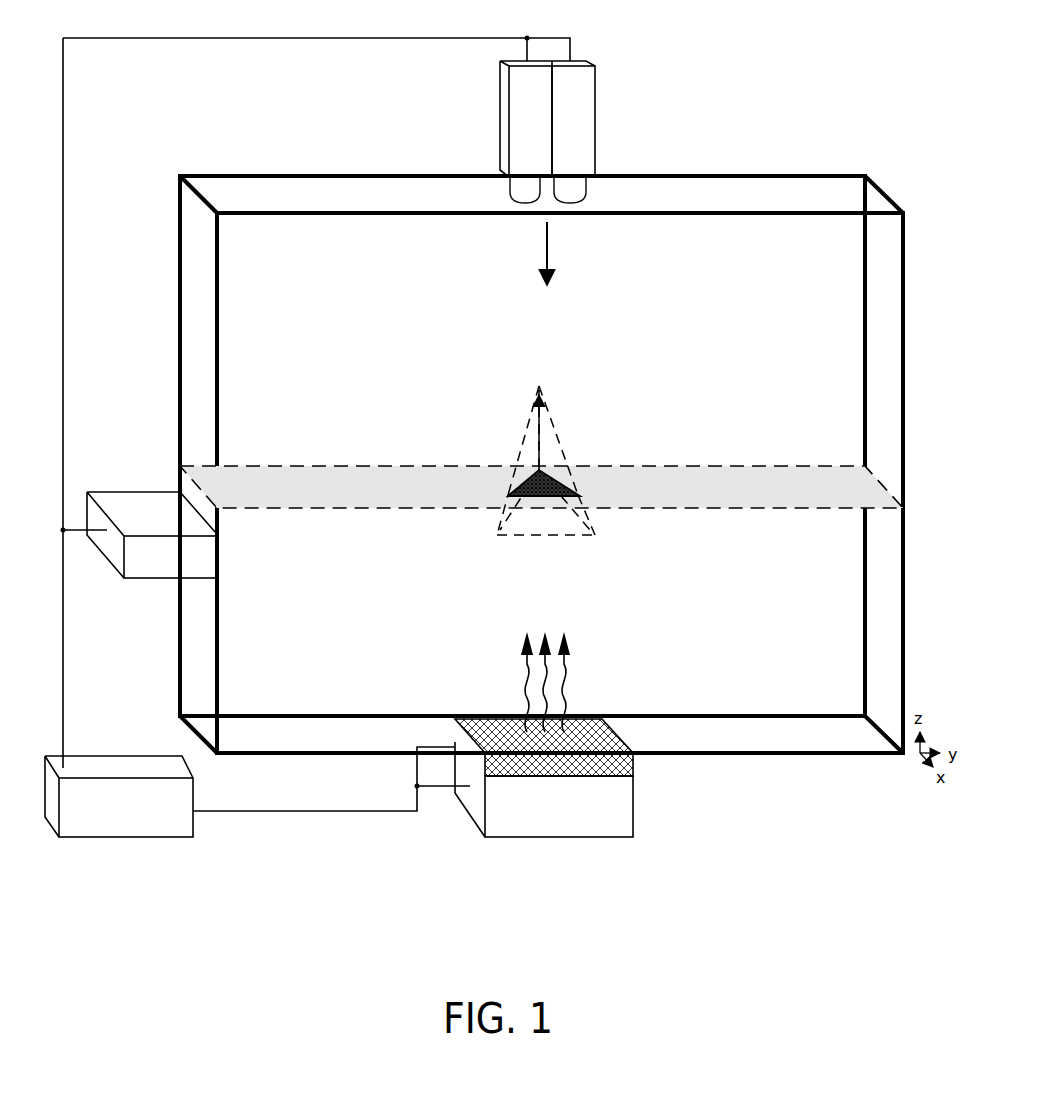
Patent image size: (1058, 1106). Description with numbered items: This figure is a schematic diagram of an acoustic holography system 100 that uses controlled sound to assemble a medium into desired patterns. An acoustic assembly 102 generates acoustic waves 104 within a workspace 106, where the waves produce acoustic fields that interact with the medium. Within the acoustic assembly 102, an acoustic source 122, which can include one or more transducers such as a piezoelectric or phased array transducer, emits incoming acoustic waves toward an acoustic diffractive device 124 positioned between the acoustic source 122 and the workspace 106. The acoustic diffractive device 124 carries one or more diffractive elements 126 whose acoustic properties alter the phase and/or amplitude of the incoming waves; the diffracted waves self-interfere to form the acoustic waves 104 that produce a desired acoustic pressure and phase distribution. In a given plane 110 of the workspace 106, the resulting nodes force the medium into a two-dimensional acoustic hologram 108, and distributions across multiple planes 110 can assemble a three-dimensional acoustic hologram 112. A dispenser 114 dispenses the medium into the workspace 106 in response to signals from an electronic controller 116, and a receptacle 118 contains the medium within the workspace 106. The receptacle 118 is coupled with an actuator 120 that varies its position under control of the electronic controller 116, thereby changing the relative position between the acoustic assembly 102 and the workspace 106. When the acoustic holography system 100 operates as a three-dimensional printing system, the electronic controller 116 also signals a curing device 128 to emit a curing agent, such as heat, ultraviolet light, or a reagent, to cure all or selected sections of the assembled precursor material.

The acoustic holography system 100 is at (832, 79).
The acoustic assembly 102 is at (549, 776).
The acoustic waves 104 is at (600, 672).
The workspace 106 is at (684, 436).
The two-dimensional acoustic hologram 108 is at (528, 482).
The plane 110 is at (398, 483).
The three-dimensional acoustic hologram 112 is at (549, 410).
The dispenser 114 is at (500, 92).
The electronic controller 116 is at (182, 837).
The receptacle 118 is at (215, 175).
The actuator 120 is at (158, 580).
The acoustic source 122 is at (634, 810).
The acoustic diffractive device 124 is at (634, 768).
The diffractive elements 126 is at (473, 722).
The curing device 128 is at (598, 94).